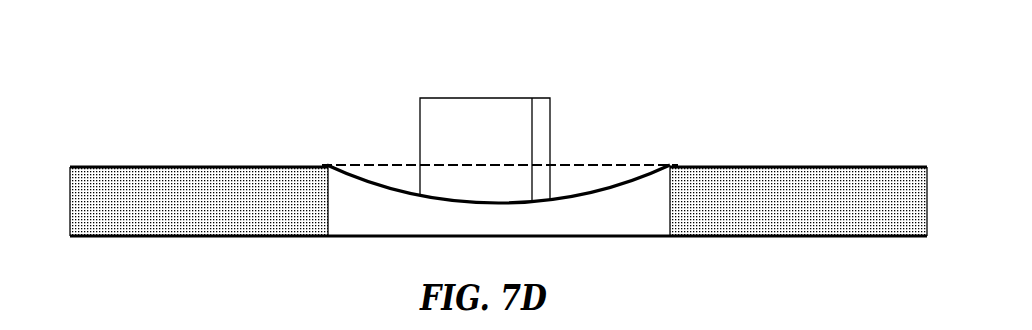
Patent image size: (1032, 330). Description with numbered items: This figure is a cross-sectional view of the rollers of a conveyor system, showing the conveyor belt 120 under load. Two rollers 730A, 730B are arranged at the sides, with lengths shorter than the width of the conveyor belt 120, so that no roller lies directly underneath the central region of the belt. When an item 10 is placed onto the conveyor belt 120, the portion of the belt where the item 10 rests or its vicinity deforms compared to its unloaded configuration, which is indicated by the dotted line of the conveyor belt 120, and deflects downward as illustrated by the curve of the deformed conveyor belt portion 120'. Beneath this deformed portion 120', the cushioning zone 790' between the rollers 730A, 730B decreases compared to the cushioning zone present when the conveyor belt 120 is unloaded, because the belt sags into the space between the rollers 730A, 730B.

The item 10 is at (485, 150).
The conveyor belt 120 is at (500, 99).
The deformed conveyor belt portion 120' is at (498, 134).
The roller 730A is at (185, 191).
The roller 730B is at (745, 186).
The cushioning zone 790' is at (501, 177).